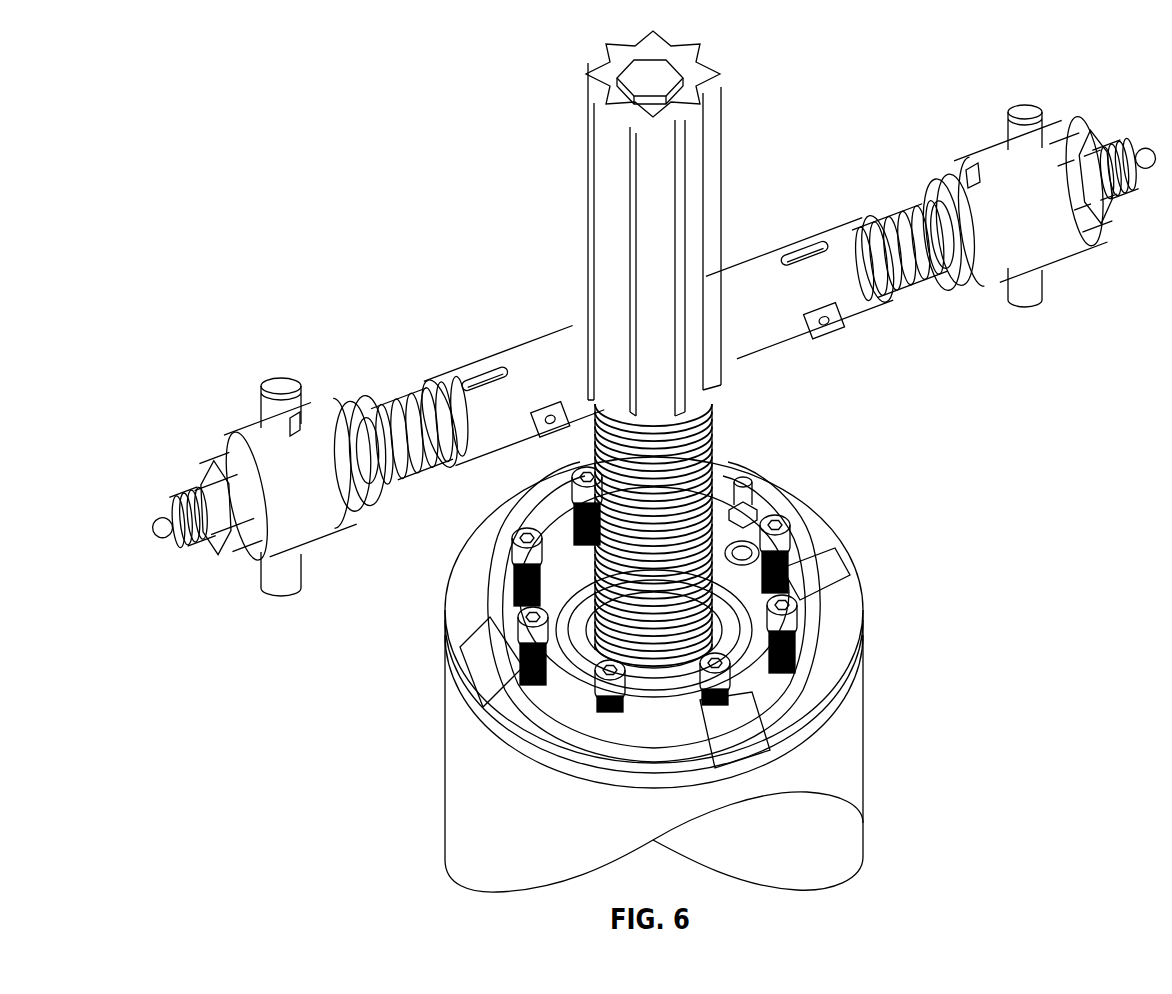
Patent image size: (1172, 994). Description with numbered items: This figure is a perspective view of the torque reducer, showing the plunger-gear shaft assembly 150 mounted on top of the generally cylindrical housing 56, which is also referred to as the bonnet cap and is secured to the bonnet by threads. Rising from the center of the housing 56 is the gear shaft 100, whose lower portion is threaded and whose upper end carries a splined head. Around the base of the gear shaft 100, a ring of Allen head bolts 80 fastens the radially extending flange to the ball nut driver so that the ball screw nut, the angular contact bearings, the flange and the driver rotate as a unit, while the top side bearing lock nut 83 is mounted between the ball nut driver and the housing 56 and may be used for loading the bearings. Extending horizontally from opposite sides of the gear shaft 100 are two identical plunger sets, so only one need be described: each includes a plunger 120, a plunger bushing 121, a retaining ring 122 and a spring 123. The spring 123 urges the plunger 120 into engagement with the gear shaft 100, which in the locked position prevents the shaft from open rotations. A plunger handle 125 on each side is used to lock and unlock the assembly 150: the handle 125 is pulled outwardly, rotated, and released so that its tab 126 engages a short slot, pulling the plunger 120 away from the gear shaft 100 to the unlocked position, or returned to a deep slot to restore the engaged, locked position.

The gear shaft 100 is at (712, 63).
The plunger-gear shaft assembly 150 is at (262, 238).
The housing 56 is at (865, 747).
The top side bearing lock nut 83 is at (850, 632).
The Allen head bolts 80 is at (792, 562).
The plungers 120 is at (530, 356).
The plunger bushings 121 is at (302, 528).
The retaining rings 122 is at (378, 488).
The springs 123 is at (423, 392).
The plunger handles 125 is at (268, 570).
The tabs 126 is at (302, 428).